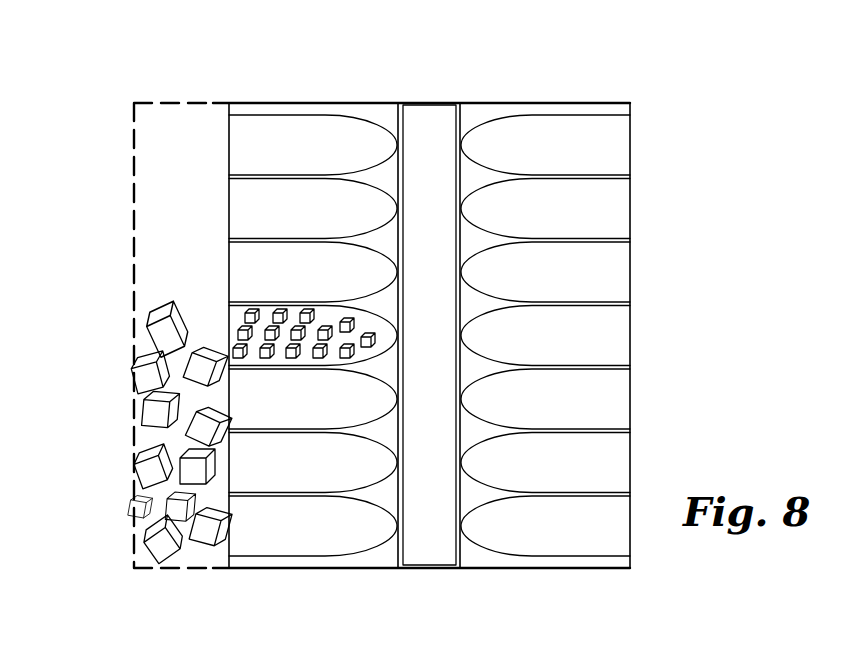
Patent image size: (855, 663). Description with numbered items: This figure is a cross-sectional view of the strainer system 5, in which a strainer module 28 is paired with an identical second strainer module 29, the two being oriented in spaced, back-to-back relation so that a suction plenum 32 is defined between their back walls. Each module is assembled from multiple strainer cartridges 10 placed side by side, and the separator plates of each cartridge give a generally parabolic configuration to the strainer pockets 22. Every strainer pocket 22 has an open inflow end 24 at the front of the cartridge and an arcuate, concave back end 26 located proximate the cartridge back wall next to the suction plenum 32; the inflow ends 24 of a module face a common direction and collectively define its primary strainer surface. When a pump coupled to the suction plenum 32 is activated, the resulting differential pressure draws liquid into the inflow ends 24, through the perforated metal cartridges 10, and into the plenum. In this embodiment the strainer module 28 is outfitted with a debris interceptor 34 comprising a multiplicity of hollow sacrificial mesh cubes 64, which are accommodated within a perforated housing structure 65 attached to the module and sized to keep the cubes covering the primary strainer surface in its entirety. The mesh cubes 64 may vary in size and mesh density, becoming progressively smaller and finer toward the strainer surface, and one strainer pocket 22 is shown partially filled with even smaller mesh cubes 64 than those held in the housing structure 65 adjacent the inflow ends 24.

The strainer system 5 is at (488, 68).
The strainer cartridge 10 is at (276, 90).
The strainer pocket 22 is at (563, 210).
The inflow end 24 is at (641, 276).
The back end 26 is at (429, 336).
The strainer module 28 is at (280, 582).
The second strainer module 29 is at (602, 340).
The suction plenum 32 is at (422, 548).
The debris interceptor 34 is at (201, 335).
The mesh cube 64 is at (150, 410).
The perforated housing structure 65 is at (133, 127).